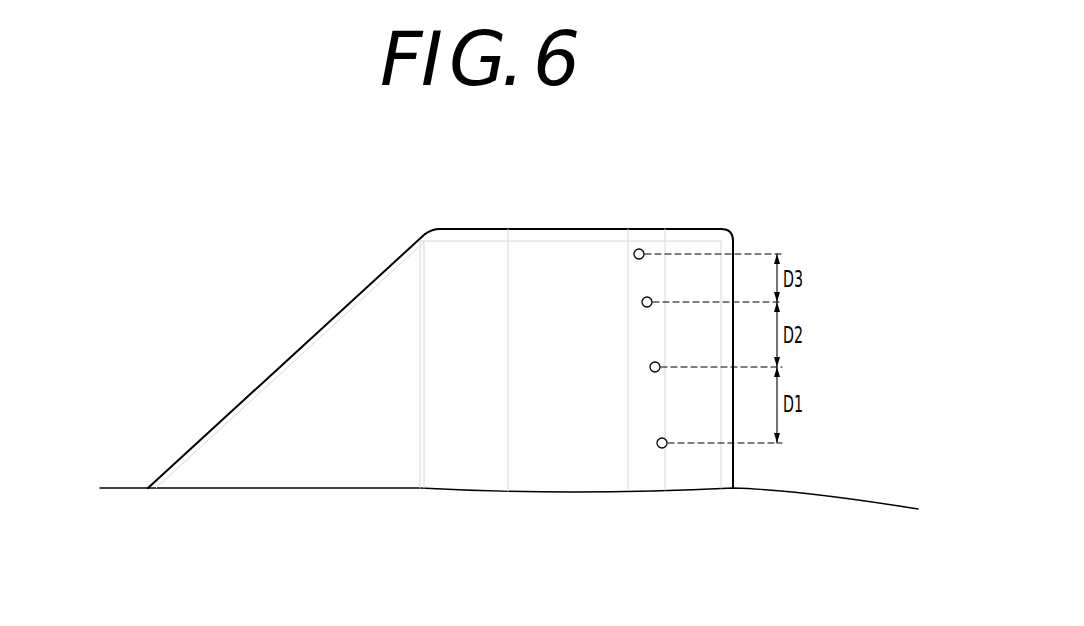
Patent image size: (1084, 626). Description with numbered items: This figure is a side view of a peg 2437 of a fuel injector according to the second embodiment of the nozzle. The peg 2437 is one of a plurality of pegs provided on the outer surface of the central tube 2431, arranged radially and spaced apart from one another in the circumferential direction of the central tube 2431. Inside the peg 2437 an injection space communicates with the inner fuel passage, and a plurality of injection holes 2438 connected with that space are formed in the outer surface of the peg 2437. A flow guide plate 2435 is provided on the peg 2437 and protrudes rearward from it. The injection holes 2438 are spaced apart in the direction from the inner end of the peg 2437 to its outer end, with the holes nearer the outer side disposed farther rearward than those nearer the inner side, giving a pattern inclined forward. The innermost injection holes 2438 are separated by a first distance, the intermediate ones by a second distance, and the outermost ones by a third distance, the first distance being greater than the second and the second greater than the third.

The central tube 2431 is at (817, 515).
The flow guide plate 2435 is at (325, 375).
The peg 2437 is at (558, 262).
The injection holes 2438 is at (638, 249).